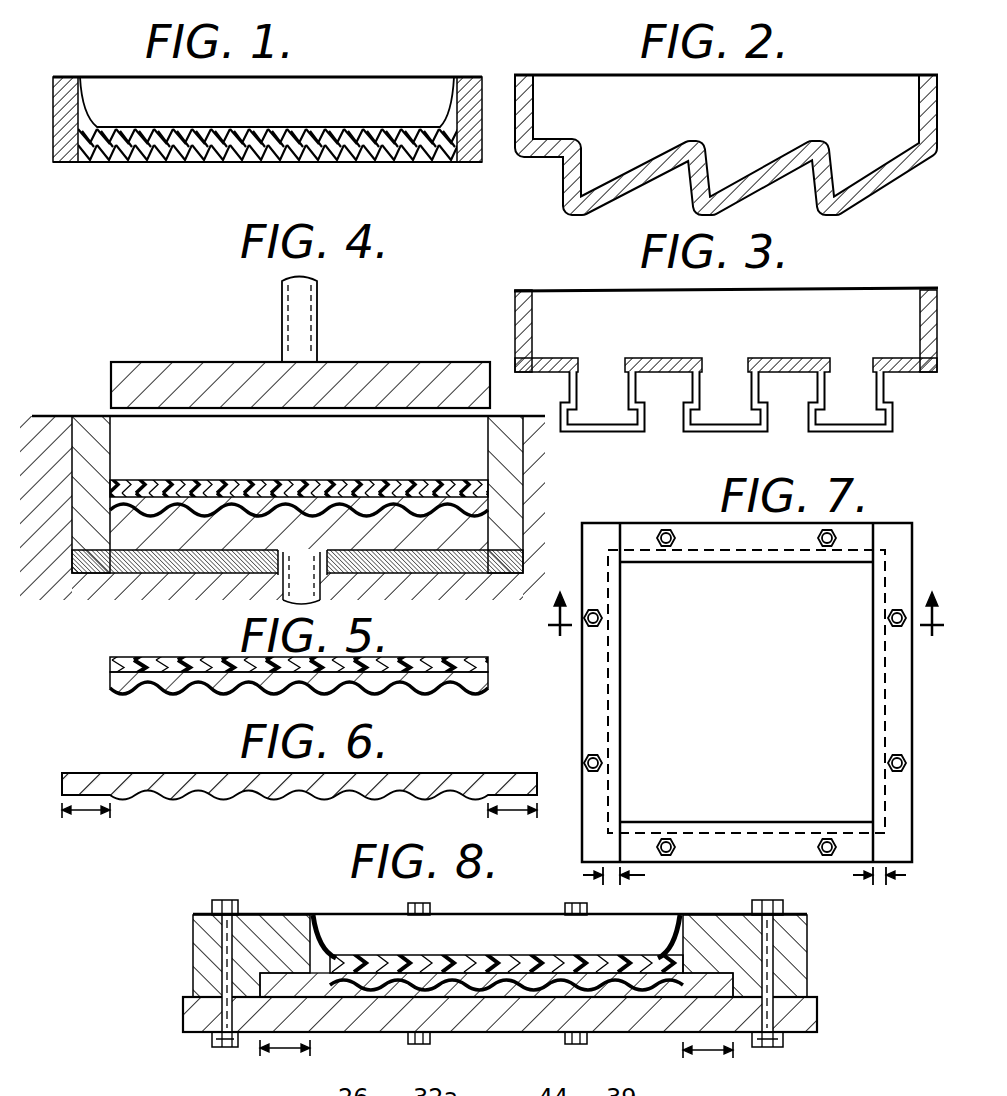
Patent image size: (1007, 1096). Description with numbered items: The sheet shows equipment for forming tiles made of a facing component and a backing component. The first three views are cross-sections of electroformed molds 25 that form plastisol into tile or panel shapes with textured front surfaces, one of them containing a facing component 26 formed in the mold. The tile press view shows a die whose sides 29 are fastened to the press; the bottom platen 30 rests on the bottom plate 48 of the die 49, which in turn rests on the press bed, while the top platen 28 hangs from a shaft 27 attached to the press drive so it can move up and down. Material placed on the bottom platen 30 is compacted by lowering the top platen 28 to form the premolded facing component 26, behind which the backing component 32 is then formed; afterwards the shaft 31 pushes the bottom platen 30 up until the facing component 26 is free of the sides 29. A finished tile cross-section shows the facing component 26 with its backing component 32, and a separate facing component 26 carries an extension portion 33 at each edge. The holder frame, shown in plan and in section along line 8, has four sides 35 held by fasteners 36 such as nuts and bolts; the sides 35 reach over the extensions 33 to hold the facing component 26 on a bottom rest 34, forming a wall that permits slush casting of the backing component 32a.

In FIG. 1, the mold 25 is at (462, 80).
In FIG. 2, the mold 25 is at (928, 78).
In FIG. 3, the mold 25 is at (524, 296).
In FIG. 1, the facing component 26 is at (100, 80).
In FIG. 4, the facing component 26 is at (232, 510).
In FIG. 5, the facing component 26 is at (432, 690).
In FIG. 6, the facing component 26 is at (229, 793).
In FIG. 7, the facing component 26 is at (715, 580).
In FIG. 8, the facing component 26 is at (452, 985).
In FIG. 4, the shaft 27 is at (317, 312).
In FIG. 4, the top platen 28 is at (458, 376).
In FIG. 4, the sides of the die 29 is at (87, 440).
In FIG. 4, the bottom platen 30 is at (428, 542).
In FIG. 4, the shaft 31 is at (320, 580).
In FIG. 4, the backing component 32 is at (378, 488).
In FIG. 5, the backing component 32 is at (446, 664).
In FIG. 8, the backing component 32a is at (432, 958).
In FIG. 6, the extension portion 33 is at (89, 818).
In FIG. 7, the extension portion 33 is at (612, 876).
In FIG. 8, the extension portion 33 is at (290, 1052).
In FIG. 8, the bottom rest 34 is at (624, 1014).
In FIG. 7, the holder sides 35 is at (630, 530).
In FIG. 8, the holder sides 35 is at (194, 936).
In FIG. 7, the fasteners 36 is at (836, 532).
In FIG. 8, the fasteners 36 is at (234, 900).
In FIG. 4, the bottom plate 48 is at (160, 560).
In FIG. 4, the die 49 is at (78, 594).
In FIG. 7, the section line 8 is at (744, 614).